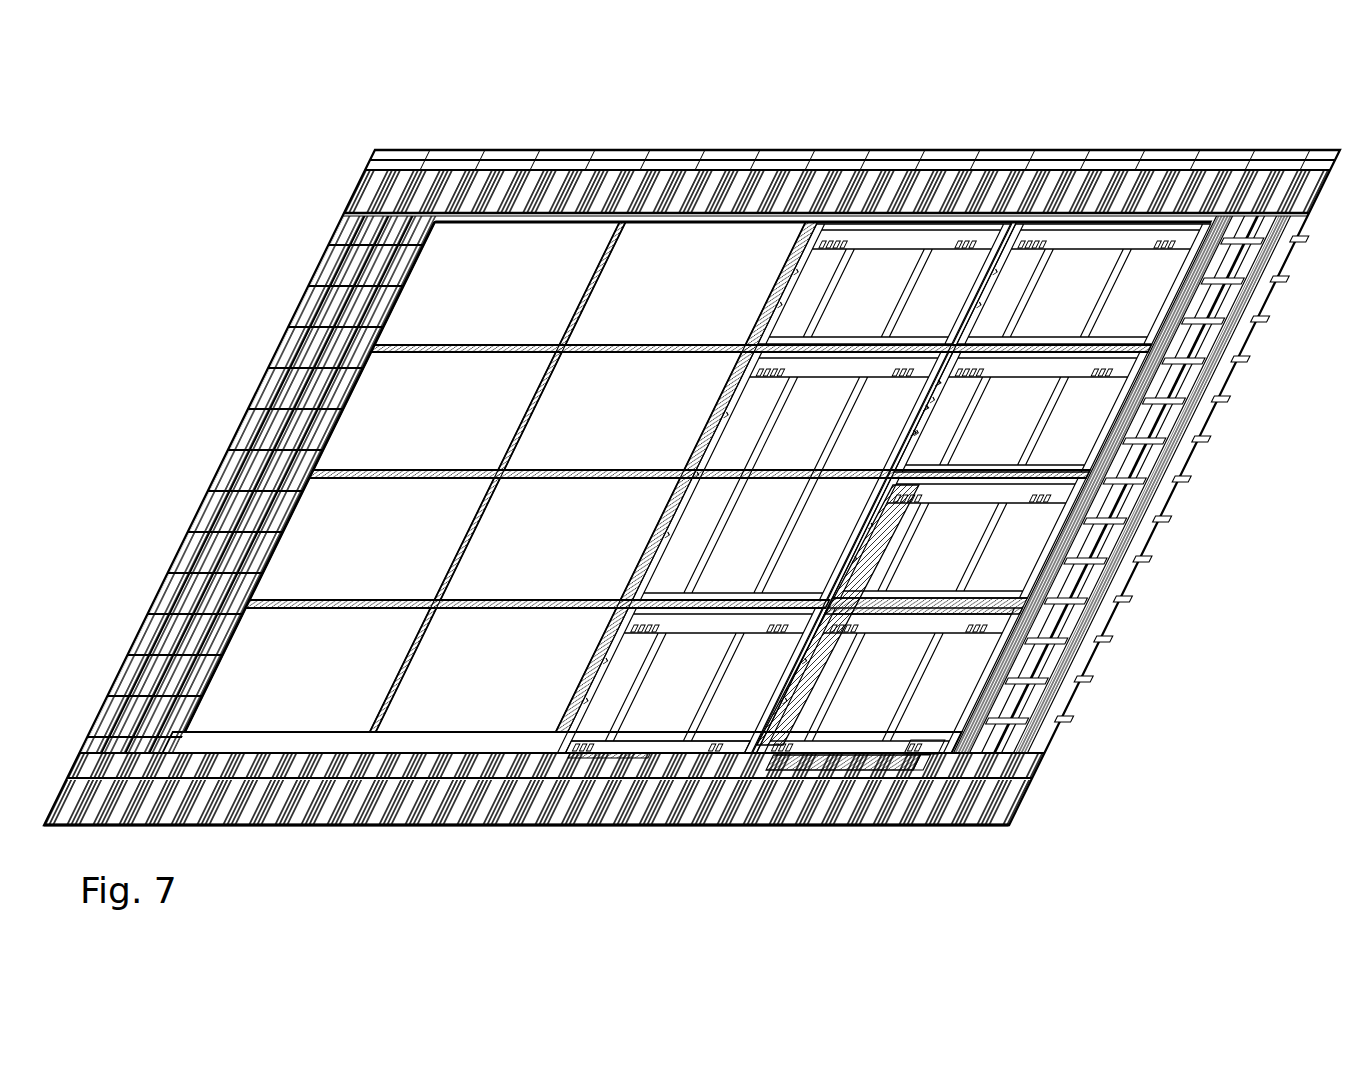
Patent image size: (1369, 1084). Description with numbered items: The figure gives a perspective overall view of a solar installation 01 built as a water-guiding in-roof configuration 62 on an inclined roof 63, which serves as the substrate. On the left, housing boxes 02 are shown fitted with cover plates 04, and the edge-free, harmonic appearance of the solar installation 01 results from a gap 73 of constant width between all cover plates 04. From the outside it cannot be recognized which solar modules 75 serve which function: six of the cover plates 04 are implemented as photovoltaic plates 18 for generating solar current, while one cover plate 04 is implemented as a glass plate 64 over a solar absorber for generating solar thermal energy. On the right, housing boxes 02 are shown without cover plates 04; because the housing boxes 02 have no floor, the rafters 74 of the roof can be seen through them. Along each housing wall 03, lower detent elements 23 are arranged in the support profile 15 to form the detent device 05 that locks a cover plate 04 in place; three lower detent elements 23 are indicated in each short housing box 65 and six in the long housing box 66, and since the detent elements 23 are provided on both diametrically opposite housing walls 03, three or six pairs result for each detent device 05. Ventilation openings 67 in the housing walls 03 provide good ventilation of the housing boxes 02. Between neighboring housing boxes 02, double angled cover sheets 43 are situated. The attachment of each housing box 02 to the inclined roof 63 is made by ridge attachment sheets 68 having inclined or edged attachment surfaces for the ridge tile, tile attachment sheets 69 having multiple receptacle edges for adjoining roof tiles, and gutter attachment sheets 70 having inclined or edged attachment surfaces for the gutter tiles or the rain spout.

The solar installation 01 is at (697, 457).
The water-guiding in-roof configuration 62 is at (831, 133).
The inclined roof 63 is at (340, 277).
The cover plate 04 is at (429, 587).
The glass plate 64 is at (547, 465).
The photovoltaic plate 18 is at (487, 690).
The solar module 75 is at (617, 423).
The gap 73 is at (797, 270).
The ridge attachment sheet 68 is at (947, 222).
The support profile 15 is at (1012, 275).
The lower detent element 23 is at (1084, 225).
The detent device 05 is at (1003, 297).
The rafter 74 is at (792, 512).
The short housing box 65 is at (1047, 440).
The long housing box 66 is at (845, 477).
The double angled cover sheet 43 is at (858, 533).
The tile attachment sheet 69 is at (965, 728).
The gutter attachment sheet 70 is at (838, 745).
The ventilation opening 67 is at (920, 750).
The housing wall 03 is at (622, 660).
The housing box 02 is at (687, 743).